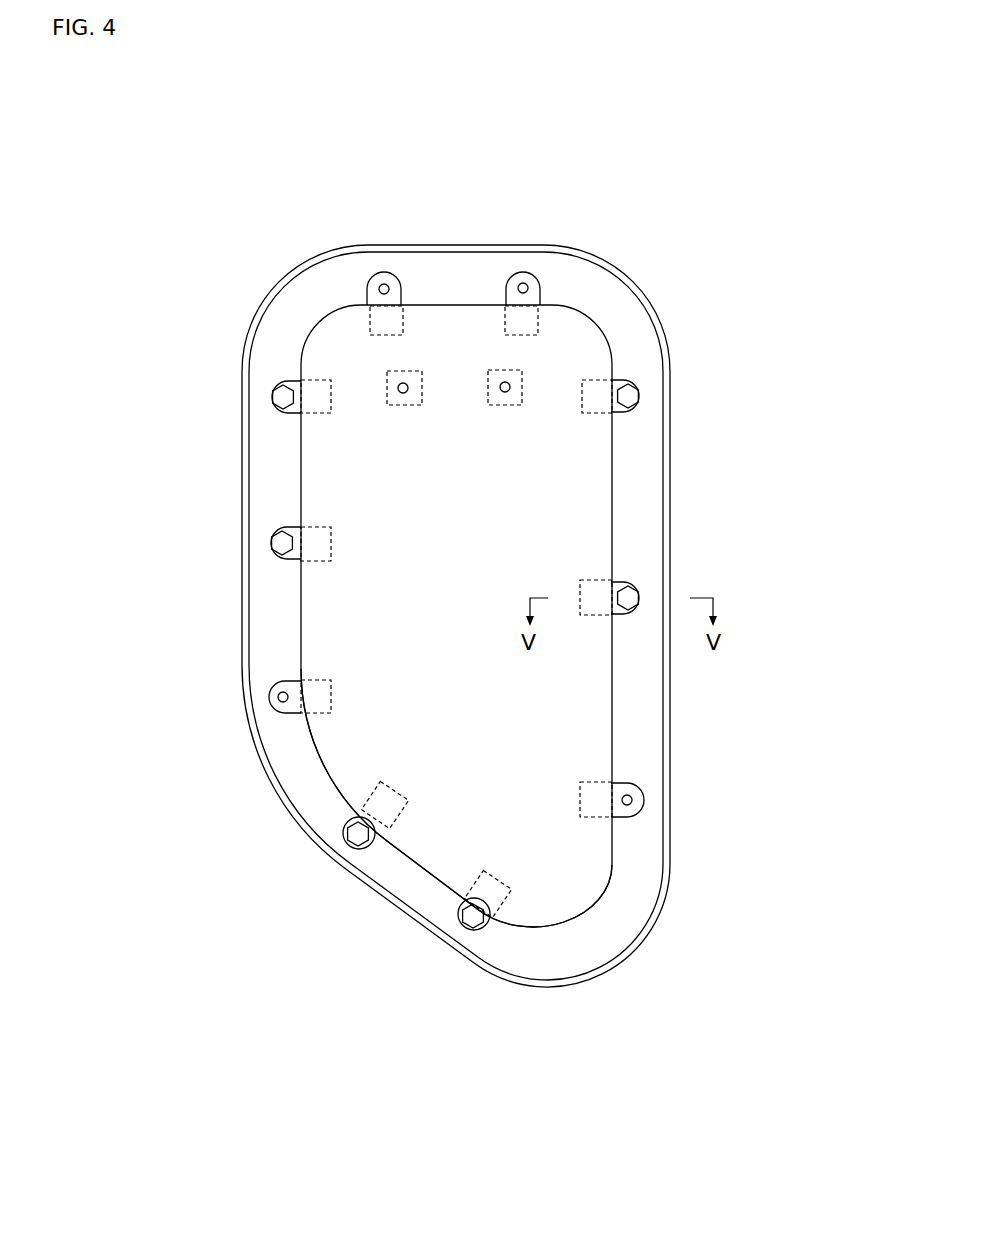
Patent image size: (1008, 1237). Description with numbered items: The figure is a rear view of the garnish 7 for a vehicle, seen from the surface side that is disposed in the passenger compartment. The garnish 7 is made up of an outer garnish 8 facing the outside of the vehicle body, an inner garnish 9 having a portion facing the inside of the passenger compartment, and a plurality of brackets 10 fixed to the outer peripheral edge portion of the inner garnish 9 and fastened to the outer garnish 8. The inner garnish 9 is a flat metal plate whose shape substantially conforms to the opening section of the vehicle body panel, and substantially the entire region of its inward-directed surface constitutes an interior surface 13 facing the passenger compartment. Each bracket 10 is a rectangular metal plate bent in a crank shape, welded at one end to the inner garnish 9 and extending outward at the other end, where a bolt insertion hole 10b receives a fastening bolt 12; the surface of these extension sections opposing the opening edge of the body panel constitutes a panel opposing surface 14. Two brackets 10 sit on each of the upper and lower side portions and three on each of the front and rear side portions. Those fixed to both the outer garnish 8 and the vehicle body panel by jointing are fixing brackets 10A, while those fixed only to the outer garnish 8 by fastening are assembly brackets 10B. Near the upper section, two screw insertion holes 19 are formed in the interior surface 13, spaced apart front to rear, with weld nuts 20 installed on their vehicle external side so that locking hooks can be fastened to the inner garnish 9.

The garnish for a vehicle 7 is at (476, 588).
The outer garnish 8 is at (640, 277).
The inner garnish 9 is at (614, 495).
The brackets 10 is at (460, 615).
The fixing bracket 10A is at (459, 593).
The assembly bracket 10B is at (460, 719).
The bolt insertion hole 10b is at (372, 286).
The fastening bolt 12 is at (268, 392).
The interior surface 13 is at (508, 780).
The panel opposing surface 14 is at (370, 306).
The screw insertion holes 19 is at (398, 386).
The weld nuts 20 is at (388, 395).